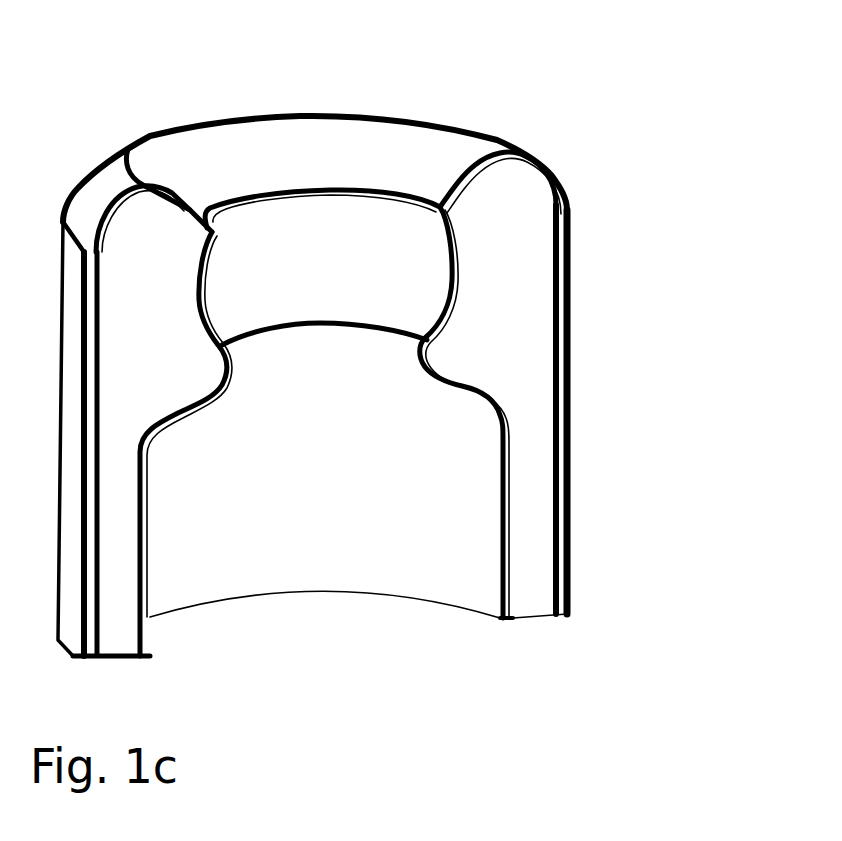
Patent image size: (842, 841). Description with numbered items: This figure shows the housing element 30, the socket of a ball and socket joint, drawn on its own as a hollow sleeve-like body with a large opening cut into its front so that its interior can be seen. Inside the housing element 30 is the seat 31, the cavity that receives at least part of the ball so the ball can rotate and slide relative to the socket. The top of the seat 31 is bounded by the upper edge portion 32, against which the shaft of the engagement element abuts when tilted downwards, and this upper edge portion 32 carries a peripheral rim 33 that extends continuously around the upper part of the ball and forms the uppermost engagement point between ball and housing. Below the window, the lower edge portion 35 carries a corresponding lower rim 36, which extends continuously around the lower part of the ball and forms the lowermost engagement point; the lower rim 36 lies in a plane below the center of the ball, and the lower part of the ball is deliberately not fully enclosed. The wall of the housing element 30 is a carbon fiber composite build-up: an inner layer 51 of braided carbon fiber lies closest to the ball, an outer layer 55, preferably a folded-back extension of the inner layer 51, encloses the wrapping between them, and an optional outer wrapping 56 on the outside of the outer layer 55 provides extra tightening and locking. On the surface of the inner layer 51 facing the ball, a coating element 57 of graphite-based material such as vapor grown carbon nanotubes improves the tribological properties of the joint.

The housing element 30 is at (503, 120).
The seat 31 is at (333, 266).
The upper edge portion 32 is at (323, 157).
The peripheral rim 33 is at (373, 187).
The lower edge portion 35 is at (220, 393).
The lower rim 36 is at (353, 336).
The inner layer 51 is at (457, 233).
The outer layer 55 is at (575, 343).
The outer wrapping 56 is at (578, 376).
The coating element 57 is at (257, 298).